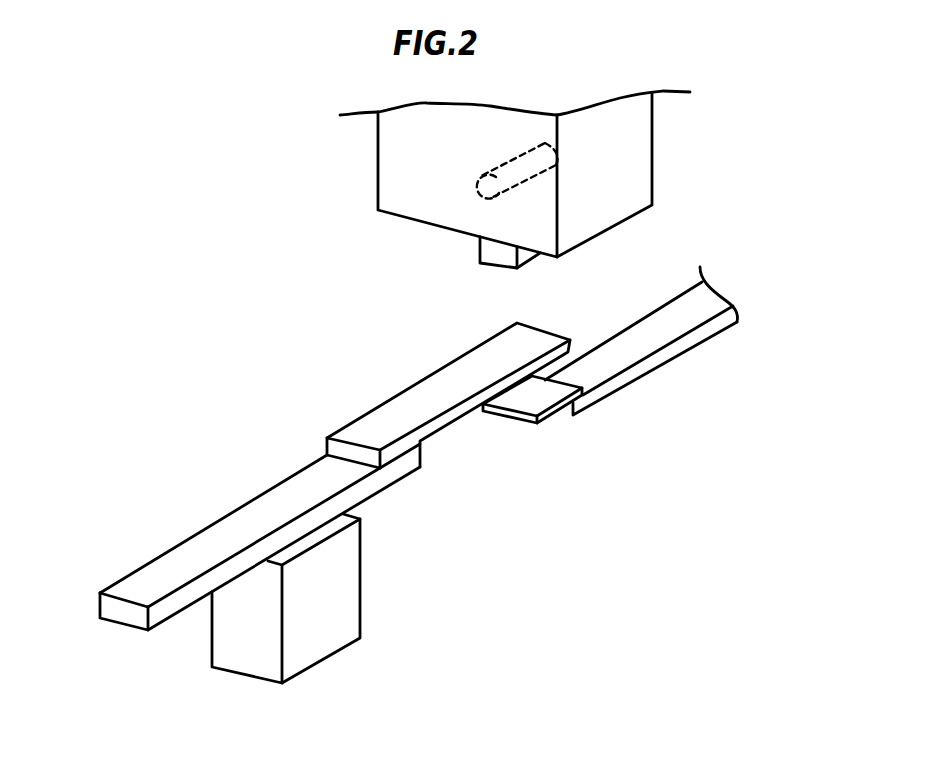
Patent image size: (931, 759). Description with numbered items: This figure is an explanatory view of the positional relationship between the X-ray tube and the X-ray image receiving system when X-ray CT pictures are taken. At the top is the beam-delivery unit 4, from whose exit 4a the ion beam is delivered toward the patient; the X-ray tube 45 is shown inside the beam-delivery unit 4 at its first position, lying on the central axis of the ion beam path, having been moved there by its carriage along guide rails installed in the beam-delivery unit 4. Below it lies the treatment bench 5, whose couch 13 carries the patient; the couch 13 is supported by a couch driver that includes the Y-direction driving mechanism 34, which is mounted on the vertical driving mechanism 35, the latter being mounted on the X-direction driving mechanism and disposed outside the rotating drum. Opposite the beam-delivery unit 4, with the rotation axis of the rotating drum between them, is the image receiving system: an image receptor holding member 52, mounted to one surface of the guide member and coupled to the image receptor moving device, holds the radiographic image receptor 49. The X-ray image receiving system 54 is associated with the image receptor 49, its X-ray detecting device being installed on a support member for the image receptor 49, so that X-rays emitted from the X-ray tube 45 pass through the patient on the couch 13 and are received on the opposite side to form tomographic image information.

The beam-delivery unit 4 is at (652, 152).
The exit 4a is at (522, 270).
The X-ray tube 45 is at (503, 160).
The treatment bench 5 is at (167, 552).
The couch 13 is at (362, 424).
The Y-direction driving mechanism 34 is at (237, 513).
The vertical driving mechanism 35 is at (348, 605).
The image receptor 49 is at (487, 410).
The image receptor holding member 52 is at (664, 311).
The X-ray image receiving system 54 is at (538, 424).